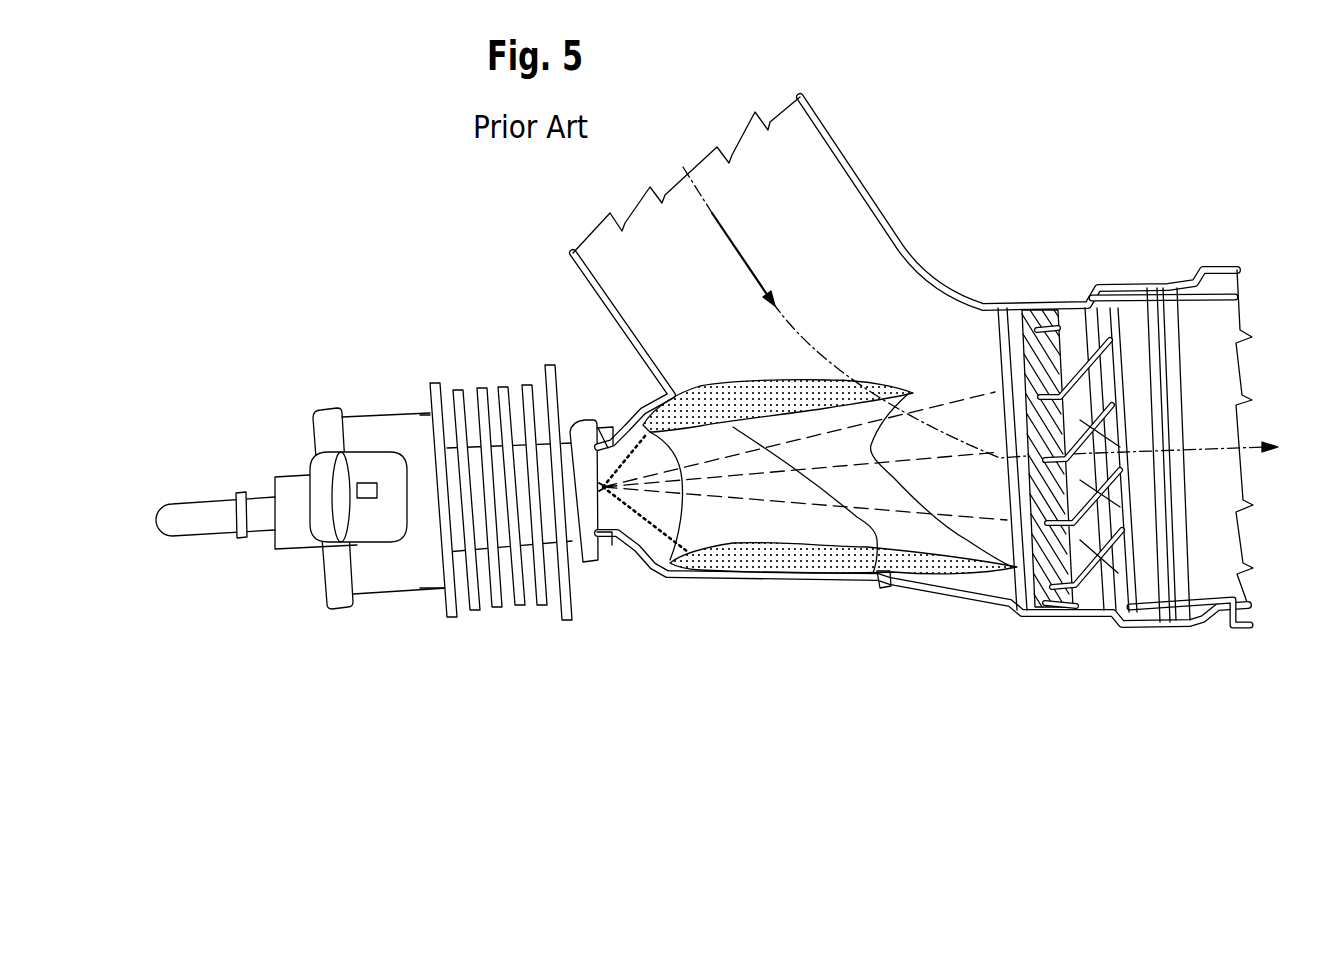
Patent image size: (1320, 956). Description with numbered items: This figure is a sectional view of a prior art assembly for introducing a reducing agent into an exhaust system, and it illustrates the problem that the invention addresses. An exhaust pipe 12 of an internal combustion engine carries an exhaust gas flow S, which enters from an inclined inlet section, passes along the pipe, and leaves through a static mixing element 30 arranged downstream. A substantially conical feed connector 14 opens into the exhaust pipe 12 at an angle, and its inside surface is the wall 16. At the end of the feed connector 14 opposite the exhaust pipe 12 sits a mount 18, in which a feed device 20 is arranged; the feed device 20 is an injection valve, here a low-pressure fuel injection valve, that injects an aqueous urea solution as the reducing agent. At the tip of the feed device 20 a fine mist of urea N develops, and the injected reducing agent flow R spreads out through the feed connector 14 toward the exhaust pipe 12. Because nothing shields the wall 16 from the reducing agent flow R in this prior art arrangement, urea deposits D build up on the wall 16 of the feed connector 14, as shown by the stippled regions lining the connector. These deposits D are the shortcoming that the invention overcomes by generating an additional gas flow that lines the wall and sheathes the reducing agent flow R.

The exhaust pipe 12 is at (833, 142).
The feed connector 14 is at (693, 575).
The wall 16 is at (821, 577).
The mount 18 is at (607, 425).
The feed device 20 is at (412, 585).
The static mixing element 30 is at (1047, 613).
The fine mist of urea N is at (650, 522).
The urea deposits D is at (773, 560).
The reducing agent flow R is at (872, 535).
The exhaust gas flow S is at (732, 246).